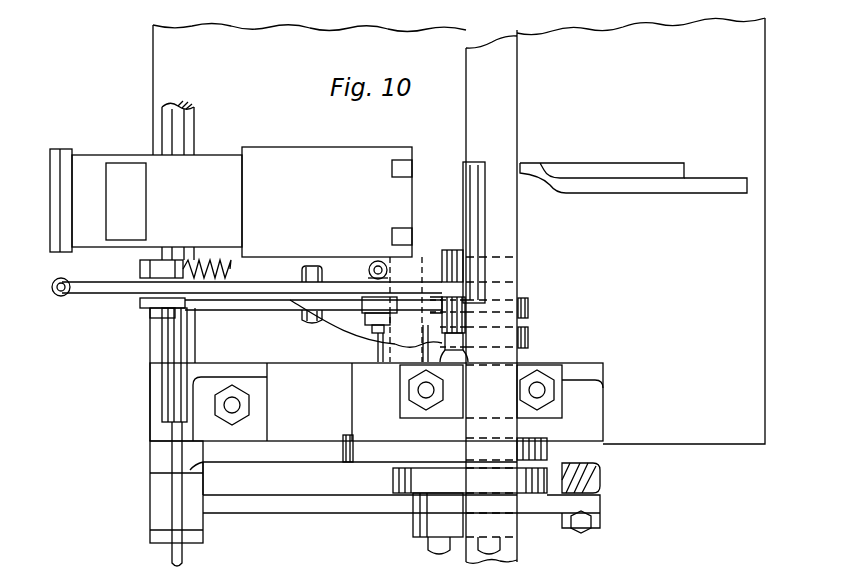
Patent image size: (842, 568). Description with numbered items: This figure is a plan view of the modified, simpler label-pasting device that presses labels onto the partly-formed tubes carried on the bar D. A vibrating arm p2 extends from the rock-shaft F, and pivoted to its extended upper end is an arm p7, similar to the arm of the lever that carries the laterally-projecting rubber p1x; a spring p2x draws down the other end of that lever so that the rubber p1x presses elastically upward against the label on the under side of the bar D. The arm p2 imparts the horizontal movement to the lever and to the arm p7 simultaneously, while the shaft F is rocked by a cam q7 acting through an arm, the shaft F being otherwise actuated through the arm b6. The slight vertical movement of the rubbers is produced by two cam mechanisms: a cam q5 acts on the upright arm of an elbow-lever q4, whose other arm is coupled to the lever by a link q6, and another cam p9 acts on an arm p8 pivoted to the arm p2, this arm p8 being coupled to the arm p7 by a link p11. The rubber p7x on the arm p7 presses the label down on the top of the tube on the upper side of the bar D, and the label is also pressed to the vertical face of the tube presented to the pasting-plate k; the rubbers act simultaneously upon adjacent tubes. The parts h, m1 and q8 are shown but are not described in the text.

The bar D is at (491, 296).
The rail m1 is at (560, 194).
The pasting-plate k is at (302, 150).
The post h is at (168, 189).
The arm p7 is at (252, 290).
The spring p2x is at (95, 300).
The vibrating arm p2 is at (141, 304).
The arm p8 is at (282, 311).
The link q6 is at (356, 276).
The rubber p7x is at (470, 203).
The rubber p1x is at (452, 262).
The elbow-lever q4 is at (405, 340).
The link p11 is at (377, 300).
The rock-shaft F is at (190, 337).
The bar q8 is at (305, 462).
The cam q7 is at (355, 462).
The arm b6 is at (349, 513).
The cam p9 is at (529, 310).
The cam q5 is at (529, 340).